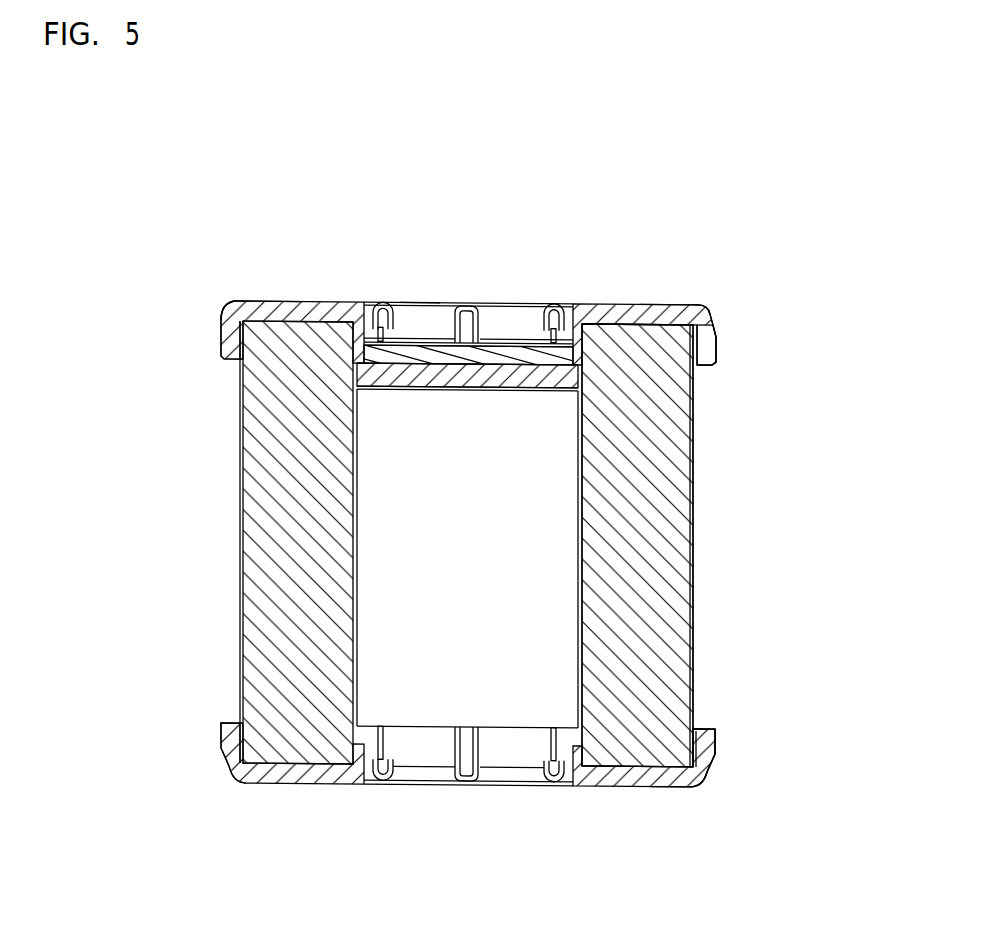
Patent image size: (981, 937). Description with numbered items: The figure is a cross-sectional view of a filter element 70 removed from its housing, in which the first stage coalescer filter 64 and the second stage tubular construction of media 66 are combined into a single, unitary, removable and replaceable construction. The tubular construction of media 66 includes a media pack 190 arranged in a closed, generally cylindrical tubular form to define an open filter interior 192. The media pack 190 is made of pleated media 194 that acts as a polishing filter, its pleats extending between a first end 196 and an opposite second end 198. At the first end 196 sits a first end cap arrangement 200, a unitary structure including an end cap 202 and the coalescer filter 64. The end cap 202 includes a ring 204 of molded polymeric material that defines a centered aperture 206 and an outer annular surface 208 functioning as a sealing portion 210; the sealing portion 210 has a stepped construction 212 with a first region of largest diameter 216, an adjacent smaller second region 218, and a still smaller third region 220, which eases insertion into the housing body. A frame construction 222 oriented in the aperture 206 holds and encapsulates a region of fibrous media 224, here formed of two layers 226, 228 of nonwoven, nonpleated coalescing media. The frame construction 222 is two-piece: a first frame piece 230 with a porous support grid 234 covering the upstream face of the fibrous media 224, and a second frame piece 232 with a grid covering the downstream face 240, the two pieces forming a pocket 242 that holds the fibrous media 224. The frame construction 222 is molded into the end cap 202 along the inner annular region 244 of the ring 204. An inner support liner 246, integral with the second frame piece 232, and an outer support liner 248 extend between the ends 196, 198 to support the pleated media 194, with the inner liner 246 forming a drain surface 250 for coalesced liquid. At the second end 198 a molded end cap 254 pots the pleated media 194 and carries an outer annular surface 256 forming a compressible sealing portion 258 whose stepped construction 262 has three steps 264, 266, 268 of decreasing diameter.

The filter element 70 is at (188, 230).
The first stage coalescer filter 64 is at (479, 420).
The second stage tubular construction of media 66 is at (378, 575).
The media pack 190 is at (693, 455).
The open filter interior 192 is at (578, 668).
The pleated media 194 is at (680, 521).
The first end 196 is at (633, 327).
The second end 198 is at (281, 766).
The first end cap arrangement 200 is at (307, 288).
The end cap 202 is at (248, 302).
The ring 204 is at (683, 305).
The center aperture 206 is at (418, 301).
The outer annular surface 208 is at (220, 350).
The sealing portion 210 is at (223, 333).
The stepped construction 212 is at (772, 275).
The first region of largest diameter 216 is at (715, 354).
The second region 218 is at (713, 329).
The third region 220 is at (703, 310).
The frame construction 222 is at (533, 336).
The fibrous media 224 is at (540, 391).
The layer of fibrous media 226 is at (400, 378).
The layer of fibrous media 228 is at (440, 346).
The first frame piece 230 is at (395, 300).
The second frame piece 232 is at (430, 392).
The support grid 234 is at (520, 328).
The downstream face 240 is at (447, 392).
The pocket 242 is at (543, 341).
The inner annular region 244 is at (371, 306).
The inner support liner 246 is at (357, 612).
The outer support liner 248 is at (241, 570).
The drain surface 250 is at (578, 612).
The end cap 254 is at (647, 787).
The outer annular surface 256 is at (222, 735).
The sealing portion 258 is at (222, 758).
The stepped construction 262 is at (728, 779).
The step 264 is at (715, 737).
The step 266 is at (715, 760).
The step 268 is at (702, 787).